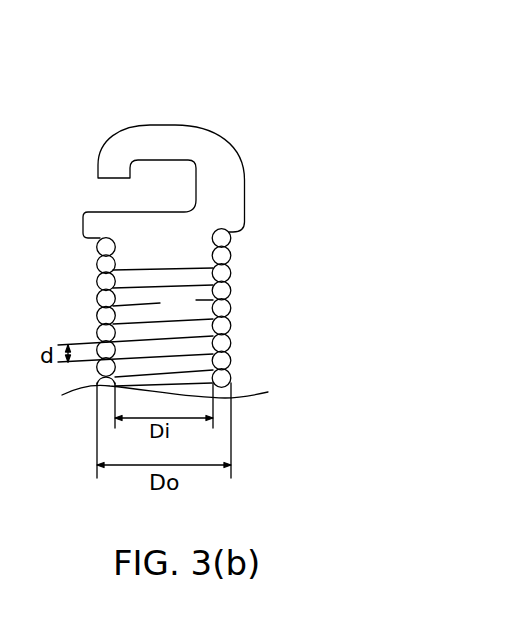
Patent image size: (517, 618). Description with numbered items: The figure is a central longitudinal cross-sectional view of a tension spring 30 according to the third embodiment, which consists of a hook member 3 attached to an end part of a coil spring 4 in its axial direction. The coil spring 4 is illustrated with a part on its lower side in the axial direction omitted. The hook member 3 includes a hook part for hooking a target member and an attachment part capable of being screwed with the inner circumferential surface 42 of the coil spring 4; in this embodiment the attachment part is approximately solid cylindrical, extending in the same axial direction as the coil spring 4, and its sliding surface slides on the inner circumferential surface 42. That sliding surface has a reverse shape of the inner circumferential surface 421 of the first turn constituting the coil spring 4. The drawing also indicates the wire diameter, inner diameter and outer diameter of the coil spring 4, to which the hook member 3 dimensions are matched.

The tension spring 30 is at (302, 128).
The hook member 3 is at (227, 192).
The coil spring 4 is at (220, 323).
The inner circumferential surface 42 is at (113, 297).
The inner circumferential surface of the first turn 421 is at (210, 238).